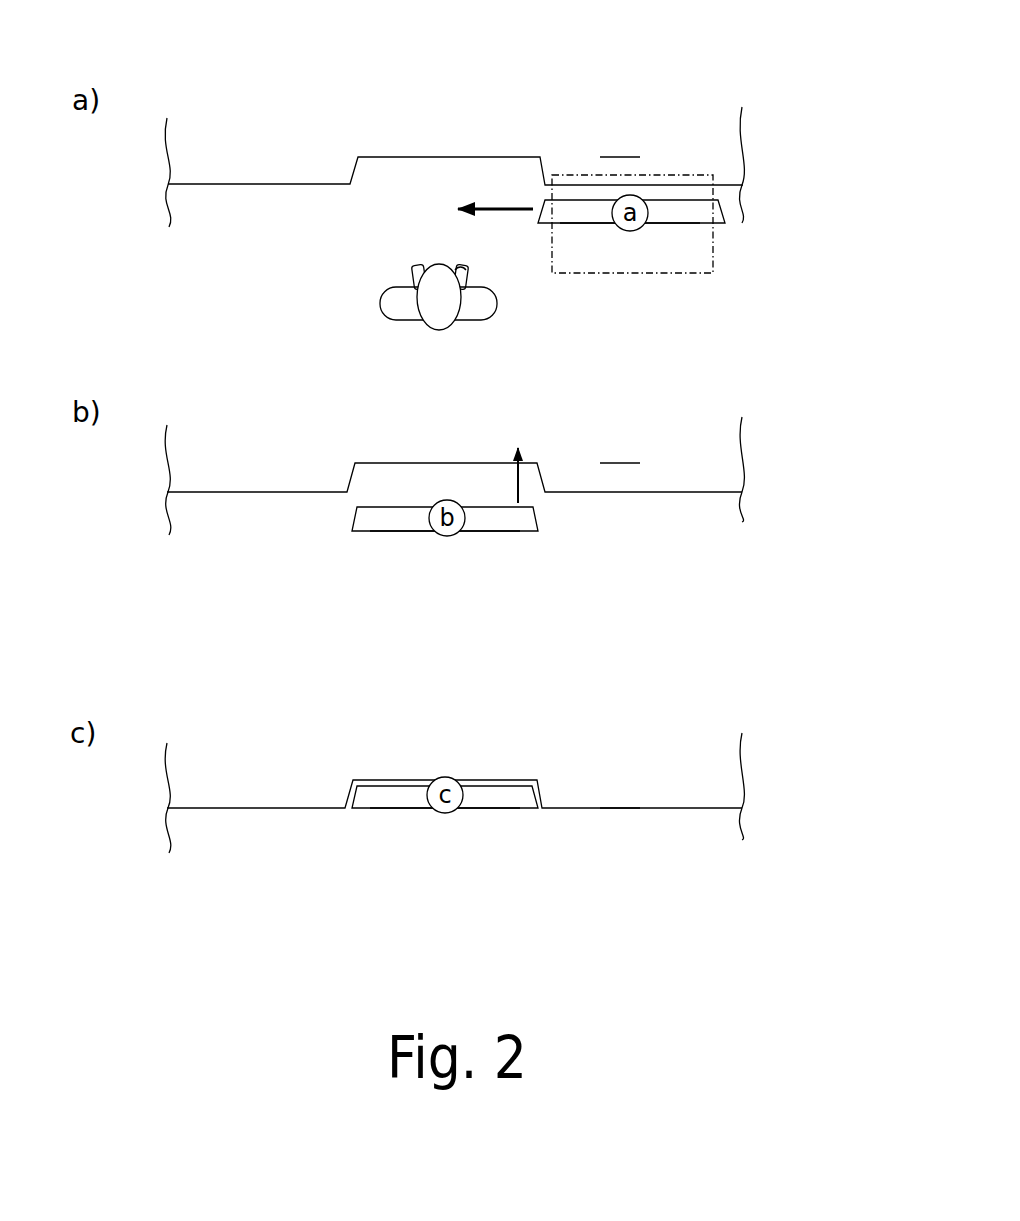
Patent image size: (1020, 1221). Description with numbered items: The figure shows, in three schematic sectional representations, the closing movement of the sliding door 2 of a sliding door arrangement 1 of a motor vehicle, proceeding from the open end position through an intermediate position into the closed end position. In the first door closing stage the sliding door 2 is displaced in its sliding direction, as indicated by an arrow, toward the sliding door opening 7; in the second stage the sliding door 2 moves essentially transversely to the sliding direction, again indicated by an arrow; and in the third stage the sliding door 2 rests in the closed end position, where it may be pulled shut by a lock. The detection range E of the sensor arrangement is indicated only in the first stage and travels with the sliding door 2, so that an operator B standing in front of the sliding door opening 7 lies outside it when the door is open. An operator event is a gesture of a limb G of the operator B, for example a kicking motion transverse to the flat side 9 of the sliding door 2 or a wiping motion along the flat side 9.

The sliding door arrangement 1 is at (632, 98).
The sliding door 2 is at (693, 215).
The sliding door opening 7 is at (372, 192).
The flat side 9 is at (660, 223).
The detection range E is at (693, 272).
The limb G is at (467, 272).
The operator B is at (389, 331).